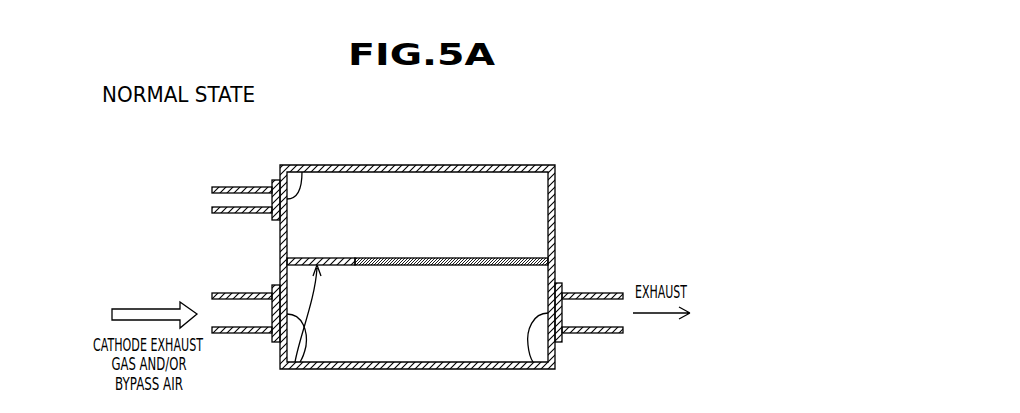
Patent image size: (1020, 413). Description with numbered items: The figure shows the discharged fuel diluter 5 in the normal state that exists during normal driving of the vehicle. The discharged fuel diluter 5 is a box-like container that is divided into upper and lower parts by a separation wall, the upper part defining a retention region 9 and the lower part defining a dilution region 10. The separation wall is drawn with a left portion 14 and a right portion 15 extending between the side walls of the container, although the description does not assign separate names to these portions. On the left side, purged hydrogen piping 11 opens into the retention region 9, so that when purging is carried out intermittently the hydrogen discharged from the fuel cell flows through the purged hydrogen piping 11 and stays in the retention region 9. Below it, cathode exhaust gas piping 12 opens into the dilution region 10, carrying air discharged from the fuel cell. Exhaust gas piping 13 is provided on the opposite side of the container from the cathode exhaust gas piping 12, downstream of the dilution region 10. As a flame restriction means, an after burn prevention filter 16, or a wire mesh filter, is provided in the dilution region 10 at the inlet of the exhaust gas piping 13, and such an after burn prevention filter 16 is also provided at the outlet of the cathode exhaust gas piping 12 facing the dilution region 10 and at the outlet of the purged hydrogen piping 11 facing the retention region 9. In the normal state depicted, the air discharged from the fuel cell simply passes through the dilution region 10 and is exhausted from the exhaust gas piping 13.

The discharged fuel diluter 5 is at (547, 157).
The retention region 9 is at (427, 226).
The dilution region 10 is at (433, 326).
The purged hydrogen piping 11 is at (246, 187).
The cathode exhaust gas piping 12 is at (244, 333).
The exhaust gas piping 13 is at (590, 333).
The partition plate 14 is at (333, 267).
The partition plate filter portion 15 is at (337, 265).
The after burn prevention filter 16 is at (302, 166).